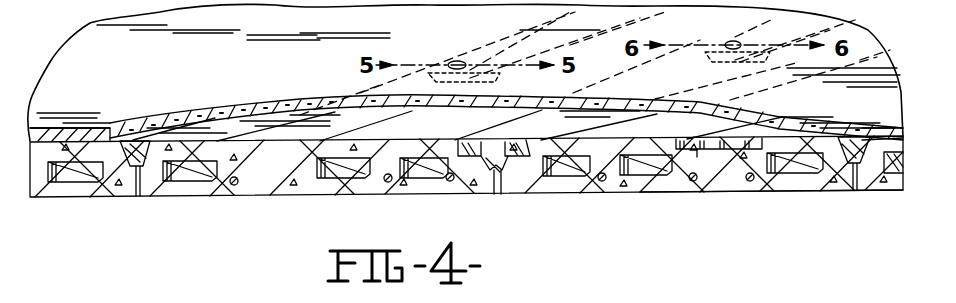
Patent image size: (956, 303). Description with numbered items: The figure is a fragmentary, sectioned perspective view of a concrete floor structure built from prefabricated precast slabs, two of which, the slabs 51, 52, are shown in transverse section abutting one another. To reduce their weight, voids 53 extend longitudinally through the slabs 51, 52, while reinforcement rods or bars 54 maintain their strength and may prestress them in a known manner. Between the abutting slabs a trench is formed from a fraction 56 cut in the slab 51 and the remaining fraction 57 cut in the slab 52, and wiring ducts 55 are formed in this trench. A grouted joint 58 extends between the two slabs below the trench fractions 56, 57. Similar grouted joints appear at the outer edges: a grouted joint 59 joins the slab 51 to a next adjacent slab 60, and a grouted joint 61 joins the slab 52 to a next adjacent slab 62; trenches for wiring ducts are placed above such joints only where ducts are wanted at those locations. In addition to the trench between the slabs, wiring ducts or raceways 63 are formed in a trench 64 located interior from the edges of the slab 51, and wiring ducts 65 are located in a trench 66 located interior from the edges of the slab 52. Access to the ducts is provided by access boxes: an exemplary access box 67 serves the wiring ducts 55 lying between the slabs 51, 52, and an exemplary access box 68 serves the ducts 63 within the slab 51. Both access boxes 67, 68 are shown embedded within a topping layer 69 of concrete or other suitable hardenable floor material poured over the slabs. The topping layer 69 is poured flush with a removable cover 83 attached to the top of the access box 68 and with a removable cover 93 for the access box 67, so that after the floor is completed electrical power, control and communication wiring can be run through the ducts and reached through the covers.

The prefabricated floor slab 51 is at (312, 195).
The prefabricated floor slab 52 is at (681, 195).
The voids 53 is at (419, 150).
The reinforcement rods or bars 54 is at (236, 190).
The wiring ducts 55 is at (510, 128).
The trench fraction 56 is at (472, 141).
The trench fraction 57 is at (522, 148).
The grouted joint 58 is at (499, 188).
The grouted joint 59 is at (143, 141).
The next adjacent slab 60 is at (52, 198).
The grouted joint 61 is at (861, 137).
The next adjacent slab 62 is at (879, 194).
The wiring ducts or raceways 63 is at (276, 132).
The trench 64 is at (247, 190).
The wiring ducts 65 is at (720, 132).
The trench 66 is at (699, 152).
The access box 67 is at (785, 38).
The access box 68 is at (555, 48).
The topping layer 69 is at (53, 129).
The removable cover 83 is at (458, 61).
The removable cover 93 is at (730, 41).